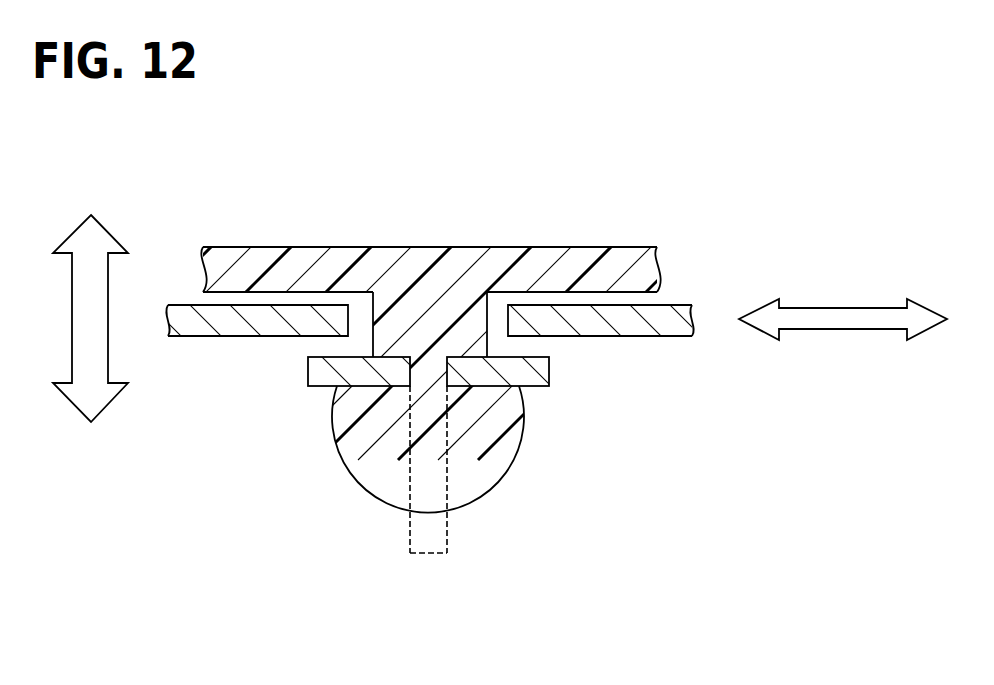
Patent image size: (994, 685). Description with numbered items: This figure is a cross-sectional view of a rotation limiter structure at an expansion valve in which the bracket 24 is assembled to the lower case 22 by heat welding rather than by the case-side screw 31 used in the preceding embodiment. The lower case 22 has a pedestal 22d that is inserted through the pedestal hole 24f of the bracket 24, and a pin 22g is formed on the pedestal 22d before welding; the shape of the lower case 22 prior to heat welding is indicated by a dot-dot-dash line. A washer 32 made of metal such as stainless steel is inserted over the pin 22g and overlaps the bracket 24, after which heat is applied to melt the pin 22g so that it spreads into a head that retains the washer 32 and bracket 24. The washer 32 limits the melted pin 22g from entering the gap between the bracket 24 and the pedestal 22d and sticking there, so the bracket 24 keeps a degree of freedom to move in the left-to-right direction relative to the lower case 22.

The lower case 22 is at (290, 247).
The pedestal 22d is at (489, 312).
The pin 22g is at (410, 513).
The bracket 24 is at (228, 336).
The pedestal hole 24f is at (350, 320).
The case-side screw 31 is at (488, 437).
The washer 32 is at (550, 368).